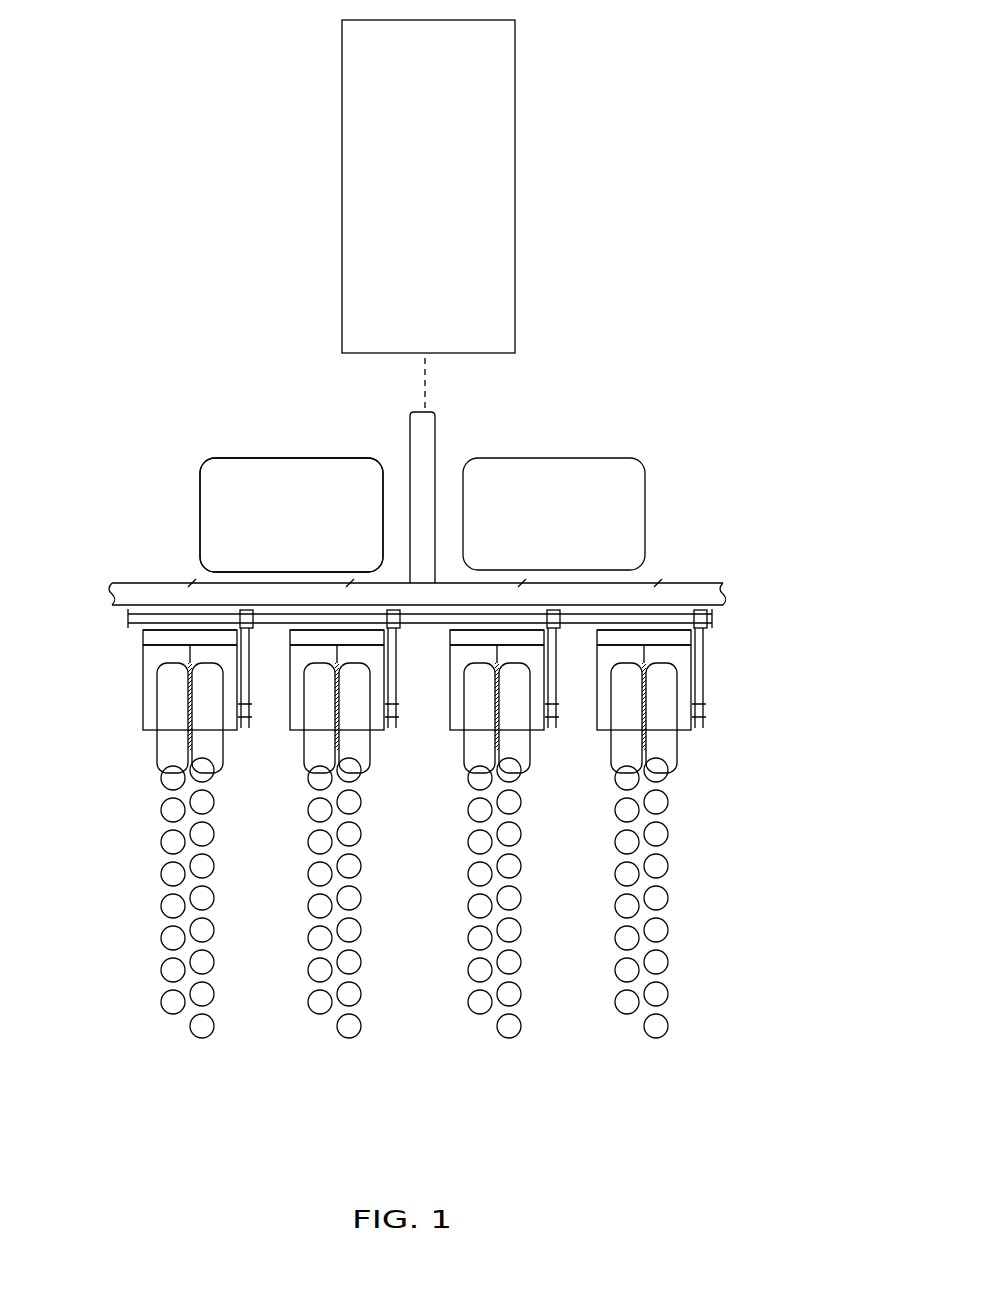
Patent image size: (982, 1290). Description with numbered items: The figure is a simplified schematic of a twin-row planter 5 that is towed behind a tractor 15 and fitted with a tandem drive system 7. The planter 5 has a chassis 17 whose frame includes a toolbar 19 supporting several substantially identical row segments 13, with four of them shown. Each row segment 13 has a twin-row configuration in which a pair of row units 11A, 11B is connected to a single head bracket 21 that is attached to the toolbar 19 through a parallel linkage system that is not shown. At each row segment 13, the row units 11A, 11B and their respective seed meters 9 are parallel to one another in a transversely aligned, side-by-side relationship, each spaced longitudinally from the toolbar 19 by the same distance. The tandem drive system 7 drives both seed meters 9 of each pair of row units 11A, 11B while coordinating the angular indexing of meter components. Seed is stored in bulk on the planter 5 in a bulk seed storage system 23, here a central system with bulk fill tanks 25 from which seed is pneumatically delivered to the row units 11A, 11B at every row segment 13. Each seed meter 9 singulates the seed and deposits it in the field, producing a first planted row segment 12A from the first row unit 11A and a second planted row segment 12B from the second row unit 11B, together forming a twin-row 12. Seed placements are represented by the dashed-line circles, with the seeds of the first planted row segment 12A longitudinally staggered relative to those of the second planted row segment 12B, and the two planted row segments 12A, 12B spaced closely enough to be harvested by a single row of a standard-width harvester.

The twin-row planter 5 is at (650, 431).
The tandem drive system 7 is at (675, 614).
The seed meter 9 is at (176, 768).
The first row unit 11A is at (155, 656).
The second row unit 11B is at (216, 652).
The twin-row 12 is at (190, 1095).
The first planted row segment 12A is at (163, 1030).
The second planted row segment 12B is at (216, 1035).
The row segment 13 is at (193, 590).
The tractor 15 is at (515, 186).
The chassis 17 is at (458, 451).
The toolbar 19 is at (534, 588).
The head bracket 21 is at (178, 640).
The bulk seed storage system 23 is at (248, 446).
The bulk fill tank 25 is at (345, 458).